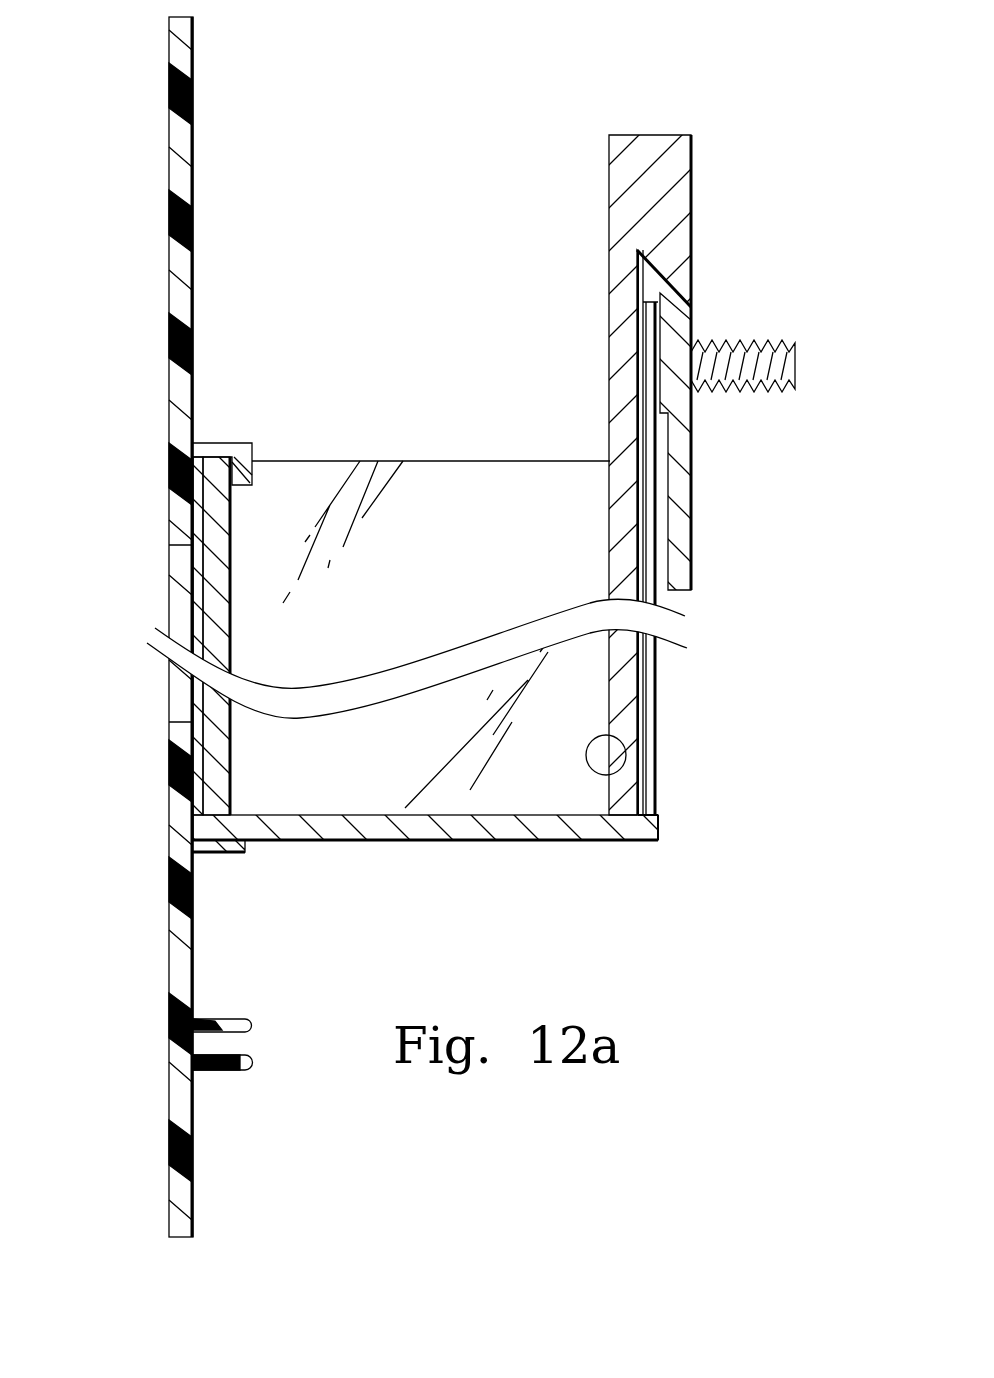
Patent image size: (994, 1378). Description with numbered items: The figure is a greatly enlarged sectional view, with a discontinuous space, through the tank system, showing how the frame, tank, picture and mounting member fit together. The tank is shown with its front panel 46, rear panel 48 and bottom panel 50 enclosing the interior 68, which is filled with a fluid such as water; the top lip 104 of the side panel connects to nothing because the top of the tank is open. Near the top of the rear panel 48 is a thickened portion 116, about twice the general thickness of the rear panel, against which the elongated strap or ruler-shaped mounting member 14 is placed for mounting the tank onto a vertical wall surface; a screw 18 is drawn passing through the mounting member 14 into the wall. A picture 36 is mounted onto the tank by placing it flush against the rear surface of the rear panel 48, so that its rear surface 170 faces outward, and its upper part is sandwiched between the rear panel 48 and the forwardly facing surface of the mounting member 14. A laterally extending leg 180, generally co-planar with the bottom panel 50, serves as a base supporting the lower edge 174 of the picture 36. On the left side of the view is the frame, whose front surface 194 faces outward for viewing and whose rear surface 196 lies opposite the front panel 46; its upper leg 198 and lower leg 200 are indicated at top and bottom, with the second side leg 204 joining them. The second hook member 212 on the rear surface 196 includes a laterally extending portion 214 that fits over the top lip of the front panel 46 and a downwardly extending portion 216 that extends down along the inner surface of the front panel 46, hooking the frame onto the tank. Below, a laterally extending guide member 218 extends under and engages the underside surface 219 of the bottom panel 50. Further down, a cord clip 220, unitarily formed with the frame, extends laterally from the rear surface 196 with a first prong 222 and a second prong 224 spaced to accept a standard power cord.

The mounting member 14 is at (694, 330).
The screw 18 is at (796, 368).
The picture 36 is at (710, 520).
The front panel 46 is at (242, 627).
The rear panel 48 is at (626, 752).
The bottom panel 50 is at (322, 810).
The interior 68 is at (428, 603).
The top lip 104 is at (433, 461).
The thickened portion 116 is at (694, 200).
The rear surface 170 is at (658, 732).
The lower edge 174 is at (658, 812).
The laterally extending leg 180 is at (660, 830).
The front surface 194 is at (170, 168).
The rear surface 196 is at (192, 172).
The upper leg 198 is at (155, 277).
The lower leg 200 is at (150, 1128).
The second side leg 204 is at (177, 578).
The second hook member 212 is at (248, 420).
The laterally extending portion 214 is at (232, 443).
The downwardly extending portion 216 is at (232, 477).
The guide member 218 is at (247, 846).
The underside surface 219 is at (288, 843).
The cord clips 220 is at (282, 1051).
The first prong 222 is at (238, 1017).
The second prong 224 is at (224, 1072).